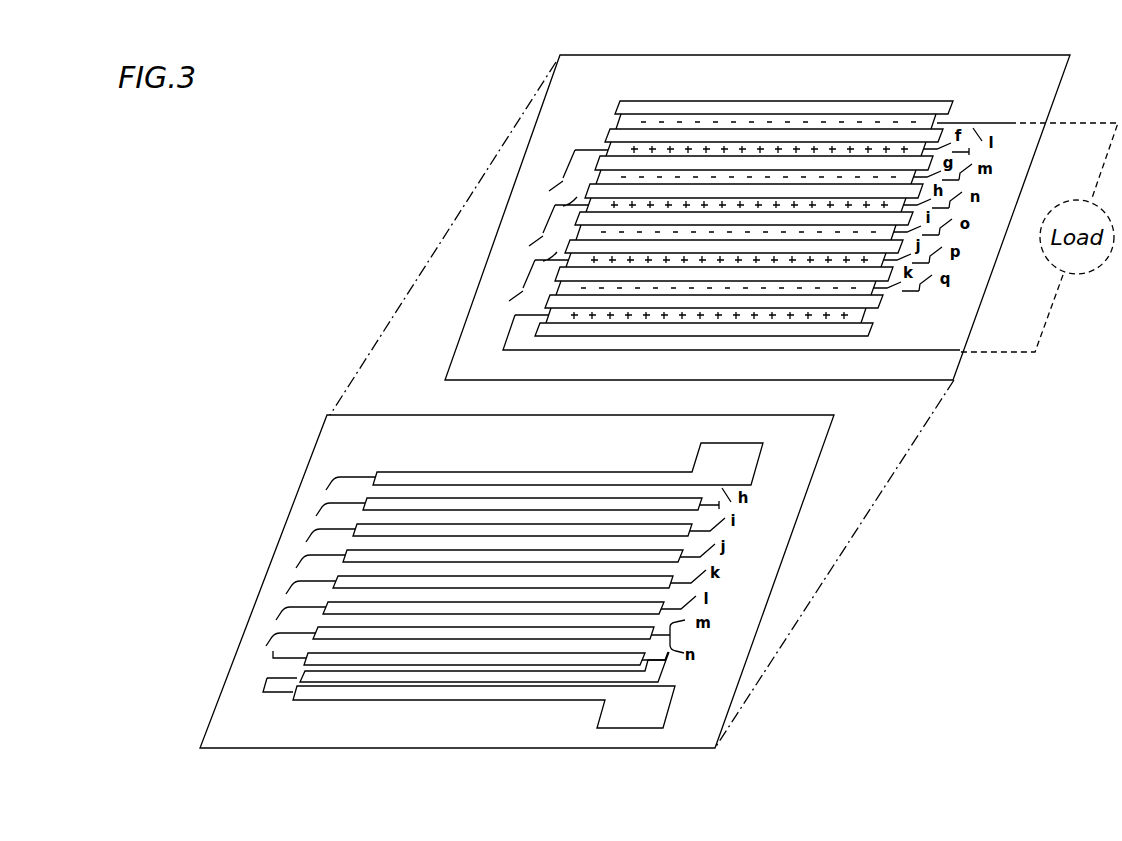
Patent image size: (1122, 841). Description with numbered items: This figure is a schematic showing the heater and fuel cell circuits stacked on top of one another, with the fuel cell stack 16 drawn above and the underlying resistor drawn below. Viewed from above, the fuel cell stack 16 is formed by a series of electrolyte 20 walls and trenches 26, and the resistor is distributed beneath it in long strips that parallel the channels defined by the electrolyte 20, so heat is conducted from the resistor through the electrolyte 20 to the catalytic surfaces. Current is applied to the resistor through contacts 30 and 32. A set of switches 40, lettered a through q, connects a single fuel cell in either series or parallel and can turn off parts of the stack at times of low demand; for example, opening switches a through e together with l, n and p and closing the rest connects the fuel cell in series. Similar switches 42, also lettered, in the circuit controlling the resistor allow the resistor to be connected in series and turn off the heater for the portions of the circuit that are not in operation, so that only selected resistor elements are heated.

The fuel cell stack 16 is at (1027, 83).
The electrolyte 20 is at (636, 101).
The trenches 26 is at (620, 118).
The contact 30 is at (726, 476).
The contact 32 is at (641, 712).
The switches 40 is at (657, 250).
The switches 42 is at (265, 565).